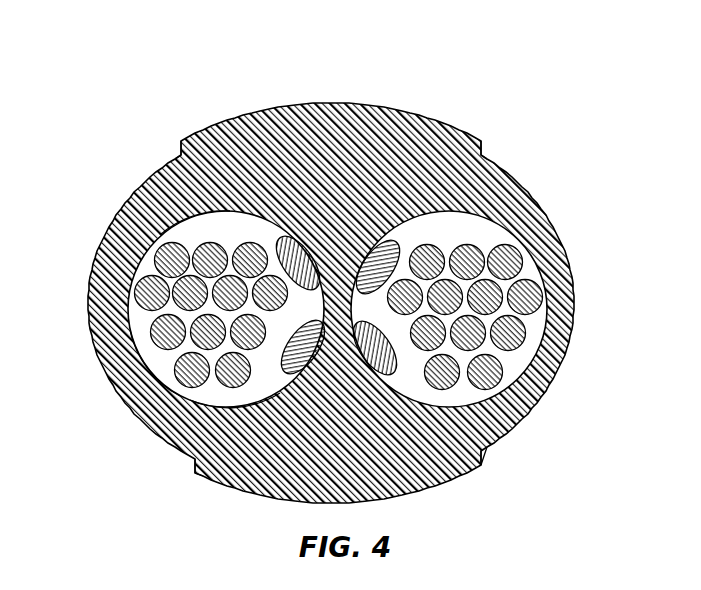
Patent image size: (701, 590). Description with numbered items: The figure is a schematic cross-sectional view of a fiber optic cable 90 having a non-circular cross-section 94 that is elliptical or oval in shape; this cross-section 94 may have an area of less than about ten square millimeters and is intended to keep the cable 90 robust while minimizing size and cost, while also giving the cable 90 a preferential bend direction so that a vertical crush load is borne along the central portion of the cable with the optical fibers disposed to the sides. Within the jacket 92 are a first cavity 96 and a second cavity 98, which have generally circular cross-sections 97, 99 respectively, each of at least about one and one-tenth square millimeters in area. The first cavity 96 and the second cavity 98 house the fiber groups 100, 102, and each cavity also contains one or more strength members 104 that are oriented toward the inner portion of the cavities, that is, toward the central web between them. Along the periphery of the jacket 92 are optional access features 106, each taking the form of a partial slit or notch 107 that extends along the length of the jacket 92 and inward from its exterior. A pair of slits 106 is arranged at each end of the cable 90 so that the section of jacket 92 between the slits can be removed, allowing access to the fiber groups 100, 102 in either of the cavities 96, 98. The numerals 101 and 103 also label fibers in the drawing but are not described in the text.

The fiber optic cable 90 is at (448, 108).
The jacket 92 is at (403, 108).
The non-circular cross-section 94 is at (288, 125).
The first cavity 96 is at (492, 236).
The circular cross-section of first cavity 97 is at (540, 272).
The second cavity 98 is at (252, 410).
The circular cross-section of second cavity 99 is at (172, 410).
The fiber group 100 is at (503, 362).
The optical fiber 101 is at (522, 338).
The fiber group 102 is at (203, 222).
The optical fibers 103 is at (160, 252).
The strength members 104 is at (301, 237).
The access features 106 is at (180, 138).
The partial slit or notch 107 is at (178, 160).